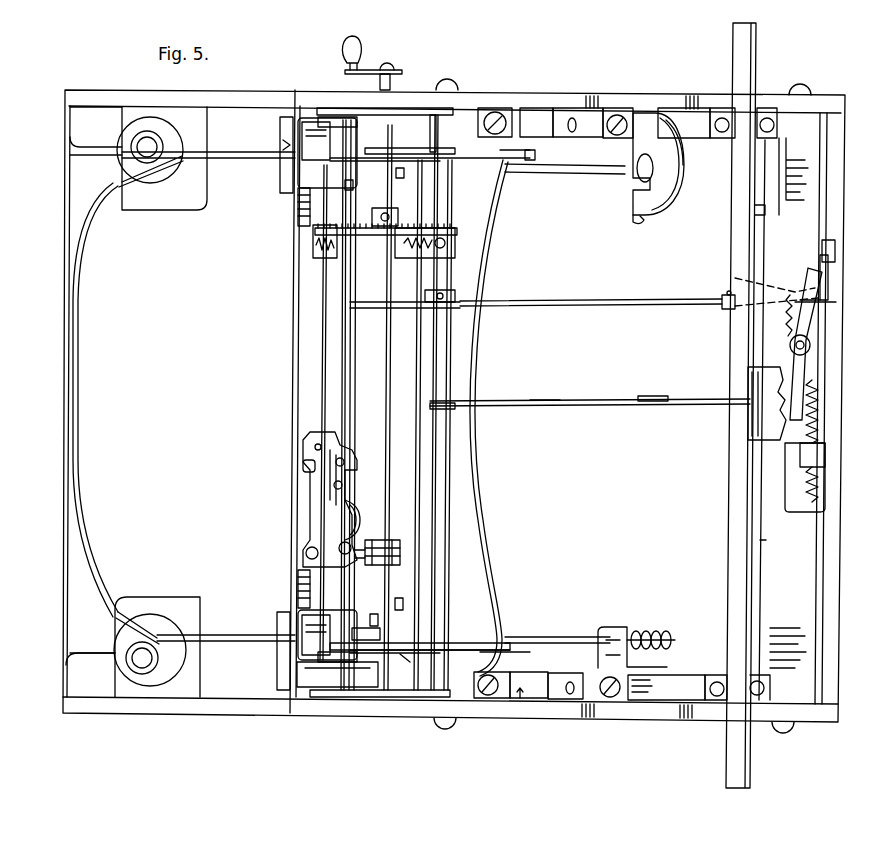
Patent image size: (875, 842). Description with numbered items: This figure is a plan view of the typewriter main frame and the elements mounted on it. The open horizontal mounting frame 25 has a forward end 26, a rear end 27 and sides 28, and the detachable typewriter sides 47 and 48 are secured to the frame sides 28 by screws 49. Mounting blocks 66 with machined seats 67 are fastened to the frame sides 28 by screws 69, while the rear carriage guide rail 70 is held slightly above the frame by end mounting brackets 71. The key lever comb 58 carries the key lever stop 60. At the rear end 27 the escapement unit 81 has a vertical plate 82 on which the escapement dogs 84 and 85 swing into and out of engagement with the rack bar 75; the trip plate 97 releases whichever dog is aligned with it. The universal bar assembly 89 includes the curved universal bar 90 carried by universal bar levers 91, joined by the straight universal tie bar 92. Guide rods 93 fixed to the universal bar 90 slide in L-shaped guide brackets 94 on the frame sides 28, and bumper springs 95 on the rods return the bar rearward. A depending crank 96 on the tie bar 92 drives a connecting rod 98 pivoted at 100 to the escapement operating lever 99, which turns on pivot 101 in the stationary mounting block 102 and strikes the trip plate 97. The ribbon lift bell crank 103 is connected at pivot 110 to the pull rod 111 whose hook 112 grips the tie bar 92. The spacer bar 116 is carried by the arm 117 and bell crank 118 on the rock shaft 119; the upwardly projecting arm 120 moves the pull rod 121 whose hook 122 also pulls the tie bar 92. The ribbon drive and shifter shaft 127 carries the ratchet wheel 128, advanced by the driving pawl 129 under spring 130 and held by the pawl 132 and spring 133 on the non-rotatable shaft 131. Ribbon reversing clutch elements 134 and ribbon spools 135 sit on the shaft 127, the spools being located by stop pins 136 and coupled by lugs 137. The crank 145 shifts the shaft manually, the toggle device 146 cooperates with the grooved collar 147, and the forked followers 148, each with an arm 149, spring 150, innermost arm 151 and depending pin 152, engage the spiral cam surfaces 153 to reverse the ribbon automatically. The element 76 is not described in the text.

The horizontal rectangular support or mounting frame 25 is at (767, 564).
The forward end 26 is at (483, 562).
The rear end 27 is at (767, 537).
The sides 28 is at (700, 137).
The detachable side 47 is at (553, 98).
The detachable side 48 is at (535, 717).
The screws 49 is at (452, 82).
The key lever comb 58 is at (296, 470).
The key lever stop 60 is at (292, 352).
The mounting blocks 66 is at (571, 112).
The notches or seats 67 is at (528, 117).
The screws 69 is at (497, 117).
The rear carriage guide rail 70 is at (732, 487).
The end mounting brackets 71 is at (775, 142).
The escapement rack bar 75 is at (757, 430).
The toothed bracket 76 is at (783, 398).
The escapement unit 81 is at (835, 379).
The vertical plate 82 is at (828, 438).
The escapement dog 84 is at (826, 402).
The escapement dog 85 is at (826, 420).
The universal bar assembly 89 is at (486, 458).
The universal bar 90 is at (478, 497).
The universal bar levers 91 is at (527, 155).
The universal tie bar 92 is at (448, 538).
The guide rods 93 is at (558, 176).
The L-shaped guide brackets 94 is at (608, 159).
The bumper springs 95 is at (645, 632).
The depending crank 96 is at (404, 307).
The trip plate 97 is at (837, 292).
The connecting rod 98 is at (598, 305).
The escapement operating lever 99 is at (803, 305).
The pivotal connection 100 is at (728, 292).
The pivot 101 is at (735, 278).
The mounting block 102 is at (821, 267).
The ribbon lift bell crank 103 is at (680, 404).
The pivot 110 is at (640, 398).
The pull rod 111 is at (537, 403).
The hook 112 is at (450, 405).
The spacer bar 116 is at (76, 477).
The arm 117 is at (222, 158).
The bell crank 118 is at (217, 624).
The rock shaft 119 is at (346, 370).
The upwardly projecting arm 120 is at (337, 675).
The pull rod 121 is at (390, 622).
The hook 122 is at (450, 640).
The ribbon drive and shifter shaft 127 is at (352, 407).
The toothed ratchet wheel 128 is at (368, 236).
The driving pawl 129 is at (405, 256).
The spring 130 is at (452, 228).
The non-rotatable shaft 131 is at (322, 333).
The holding pawl 132 is at (317, 240).
The spring 133 is at (323, 253).
The ribbon reversing cams or clutch elements 134 is at (387, 155).
The ribbon spools 135 is at (410, 108).
The radial stop pins 136 is at (350, 160).
The lugs or pins 137 is at (413, 153).
The crank 145 is at (366, 37).
The spring-loaded toggle device 146 is at (326, 534).
The grooved collar 147 is at (400, 542).
The forked followers 148 is at (282, 152).
The arm 149 is at (318, 118).
The spring 150 is at (311, 164).
The innermost arm 151 is at (333, 185).
The depending pin 152 is at (353, 183).
The spiral cam surface 153 is at (402, 173).